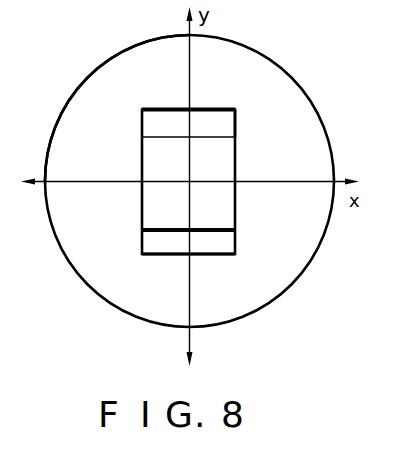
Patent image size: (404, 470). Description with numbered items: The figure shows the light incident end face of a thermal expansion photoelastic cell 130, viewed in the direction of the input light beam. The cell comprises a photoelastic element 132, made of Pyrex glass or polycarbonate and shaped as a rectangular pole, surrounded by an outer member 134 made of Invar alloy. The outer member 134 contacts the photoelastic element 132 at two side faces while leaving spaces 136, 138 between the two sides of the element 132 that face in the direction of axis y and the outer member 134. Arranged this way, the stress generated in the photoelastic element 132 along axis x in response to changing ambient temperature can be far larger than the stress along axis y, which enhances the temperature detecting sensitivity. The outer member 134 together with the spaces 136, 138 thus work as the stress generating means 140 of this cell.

The thermal expansion photoelastic cell 130 is at (293, 76).
The photoelastic element 132 is at (145, 210).
The outer member 134 is at (112, 82).
The space 136 is at (221, 118).
The space 138 is at (224, 250).
The stress generating means 140 is at (240, 123).